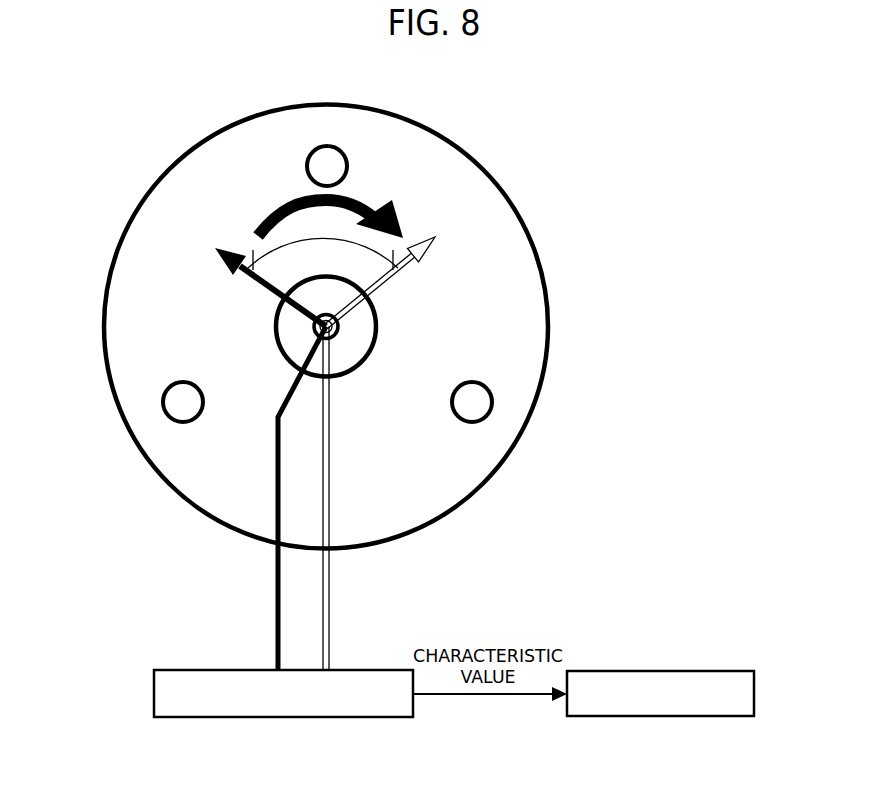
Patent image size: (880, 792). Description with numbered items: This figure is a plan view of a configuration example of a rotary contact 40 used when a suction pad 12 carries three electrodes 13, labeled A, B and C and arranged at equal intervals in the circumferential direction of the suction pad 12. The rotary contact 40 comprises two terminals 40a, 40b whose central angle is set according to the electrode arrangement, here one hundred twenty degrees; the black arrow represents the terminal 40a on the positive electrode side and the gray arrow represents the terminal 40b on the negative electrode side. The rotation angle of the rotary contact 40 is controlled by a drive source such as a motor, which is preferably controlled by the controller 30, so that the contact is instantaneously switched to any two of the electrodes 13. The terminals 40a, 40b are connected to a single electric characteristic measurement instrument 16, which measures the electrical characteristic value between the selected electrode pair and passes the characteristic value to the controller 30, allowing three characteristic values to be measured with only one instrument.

The suction pad 12 is at (500, 211).
The electrode 13 is at (326, 146).
The rotary contact 40 is at (396, 290).
The terminal 40a is at (264, 292).
The terminal 40b is at (382, 292).
The electric characteristic measurement instrument 16 is at (360, 670).
The controller 30 is at (660, 671).